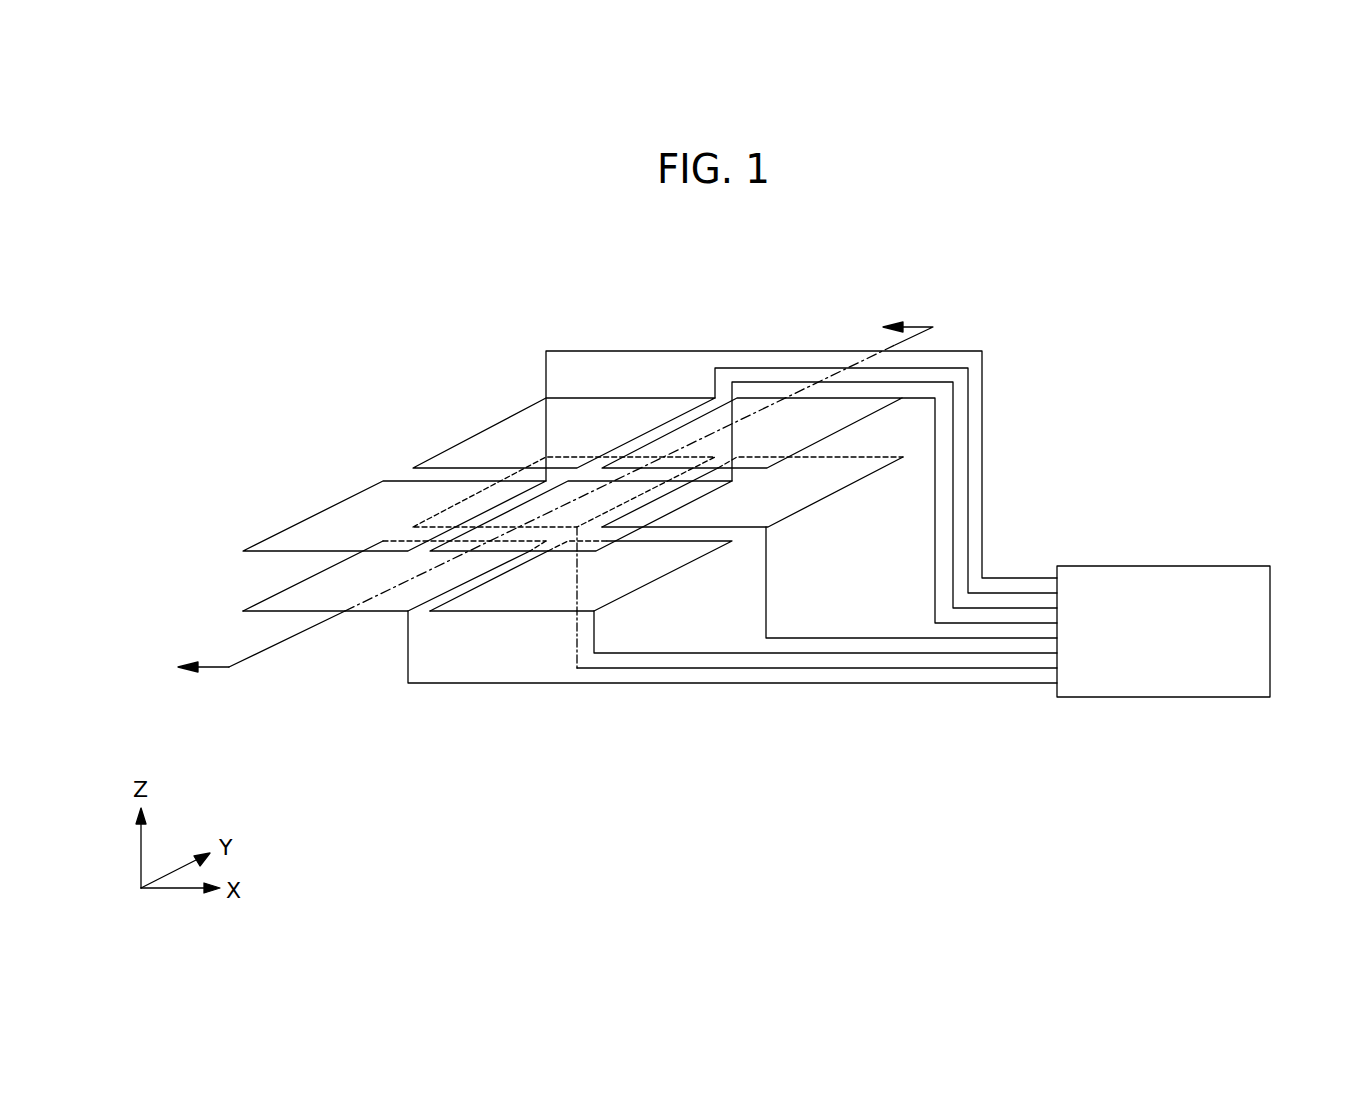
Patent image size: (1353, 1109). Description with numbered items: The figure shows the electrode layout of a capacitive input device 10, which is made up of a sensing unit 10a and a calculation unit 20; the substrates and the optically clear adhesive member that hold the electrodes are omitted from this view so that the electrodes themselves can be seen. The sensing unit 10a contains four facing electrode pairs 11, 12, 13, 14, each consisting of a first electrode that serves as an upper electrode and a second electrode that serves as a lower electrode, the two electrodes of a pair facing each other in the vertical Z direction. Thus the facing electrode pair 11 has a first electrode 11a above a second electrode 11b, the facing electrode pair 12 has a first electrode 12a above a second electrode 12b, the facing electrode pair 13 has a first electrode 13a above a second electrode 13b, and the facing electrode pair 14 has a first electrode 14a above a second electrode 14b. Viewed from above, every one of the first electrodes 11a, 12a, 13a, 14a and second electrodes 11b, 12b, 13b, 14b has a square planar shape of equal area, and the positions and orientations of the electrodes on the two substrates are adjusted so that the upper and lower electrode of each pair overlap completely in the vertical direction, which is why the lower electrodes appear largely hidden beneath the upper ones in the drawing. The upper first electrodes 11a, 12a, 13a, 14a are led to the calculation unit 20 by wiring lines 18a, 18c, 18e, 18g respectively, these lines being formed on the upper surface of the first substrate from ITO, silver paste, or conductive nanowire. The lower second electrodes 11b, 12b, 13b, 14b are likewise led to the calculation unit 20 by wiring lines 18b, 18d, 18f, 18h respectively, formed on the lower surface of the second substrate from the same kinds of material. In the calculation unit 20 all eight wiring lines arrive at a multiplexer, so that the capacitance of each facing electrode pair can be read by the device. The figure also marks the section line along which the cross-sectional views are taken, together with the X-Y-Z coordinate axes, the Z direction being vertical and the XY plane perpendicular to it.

The capacitive input device 10 is at (1036, 306).
The sensing unit 10a is at (490, 342).
The facing electrode pair 11 is at (350, 546).
The first electrode 11a is at (293, 530).
The second electrode 11b is at (288, 595).
The facing electrode pair 12 is at (531, 462).
The first electrode 12a is at (493, 440).
The second electrode 12b is at (542, 462).
The facing electrode pair 13 is at (760, 490).
The first electrode 13a is at (845, 418).
The second electrode 13b is at (785, 497).
The facing electrode pair 14 is at (581, 583).
The first electrode 14a is at (480, 545).
The second electrode 14b is at (525, 585).
The wiring line 18a is at (667, 350).
The wiring line 18b is at (445, 685).
The wiring line 18c is at (757, 367).
The wiring line 18d is at (623, 668).
The wiring line 18e is at (935, 433).
The wiring line 18f is at (800, 638).
The wiring line 18g is at (953, 390).
The wiring line 18h is at (738, 653).
The calculation unit 20 is at (1162, 565).